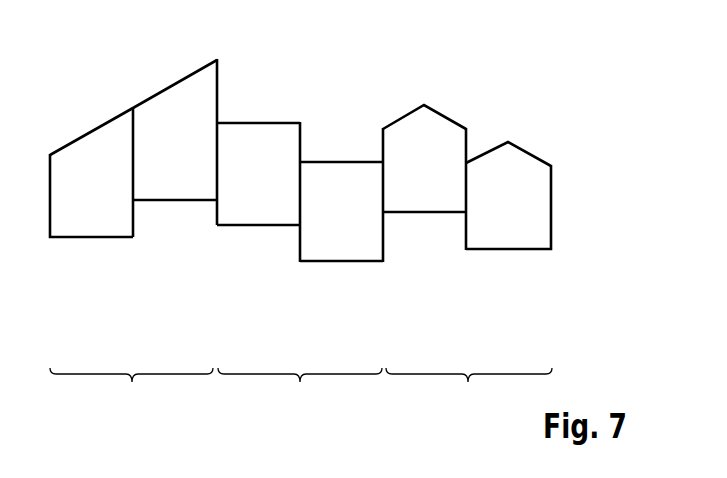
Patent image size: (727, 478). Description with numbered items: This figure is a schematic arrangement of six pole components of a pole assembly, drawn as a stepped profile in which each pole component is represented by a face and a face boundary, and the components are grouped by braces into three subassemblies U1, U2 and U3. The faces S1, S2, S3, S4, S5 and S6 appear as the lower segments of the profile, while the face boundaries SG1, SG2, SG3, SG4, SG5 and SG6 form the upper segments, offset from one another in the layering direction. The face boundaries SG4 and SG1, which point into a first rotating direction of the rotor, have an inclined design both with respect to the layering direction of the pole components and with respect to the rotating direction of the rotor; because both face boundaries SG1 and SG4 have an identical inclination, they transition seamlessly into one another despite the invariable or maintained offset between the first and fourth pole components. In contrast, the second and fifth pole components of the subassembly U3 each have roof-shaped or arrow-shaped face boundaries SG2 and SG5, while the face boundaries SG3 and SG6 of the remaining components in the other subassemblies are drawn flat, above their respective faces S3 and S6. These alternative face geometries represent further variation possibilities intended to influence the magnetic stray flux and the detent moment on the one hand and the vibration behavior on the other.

The face boundary SG1 is at (175, 80).
The face boundary SG2 is at (424, 105).
The face boundary SG3 is at (258, 123).
The face boundary SG4 is at (92, 127).
The face boundary SG5 is at (508, 142).
The face boundary SG6 is at (363, 158).
The face S1 is at (193, 190).
The face S2 is at (406, 203).
The face S3 is at (235, 218).
The face S4 is at (110, 228).
The face S5 is at (533, 238).
The face S6 is at (366, 248).
The subassembly U1 is at (131, 390).
The subassembly U2 is at (300, 390).
The subassembly U3 is at (469, 390).